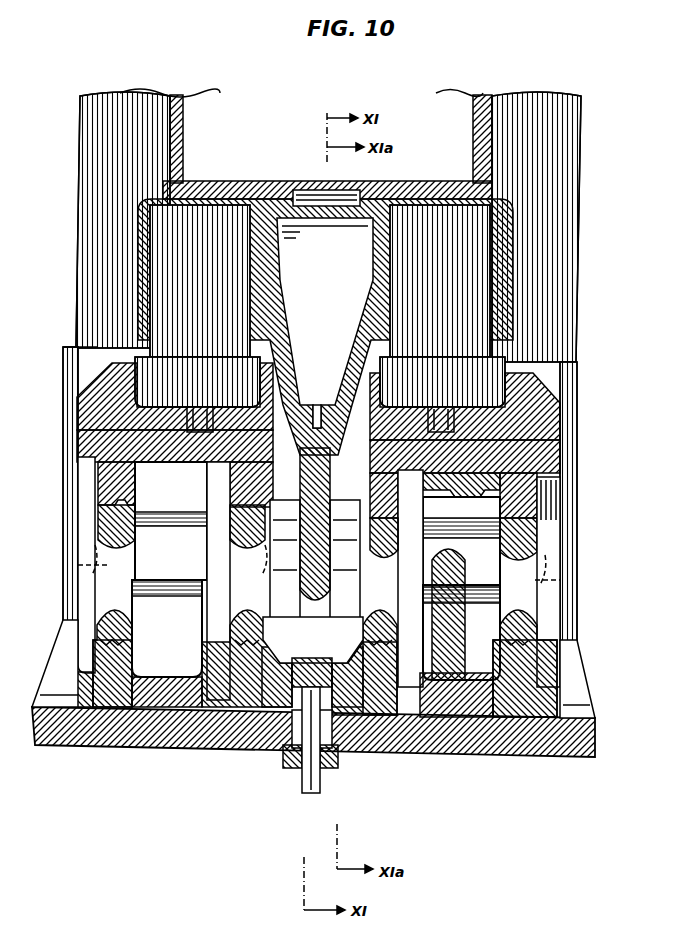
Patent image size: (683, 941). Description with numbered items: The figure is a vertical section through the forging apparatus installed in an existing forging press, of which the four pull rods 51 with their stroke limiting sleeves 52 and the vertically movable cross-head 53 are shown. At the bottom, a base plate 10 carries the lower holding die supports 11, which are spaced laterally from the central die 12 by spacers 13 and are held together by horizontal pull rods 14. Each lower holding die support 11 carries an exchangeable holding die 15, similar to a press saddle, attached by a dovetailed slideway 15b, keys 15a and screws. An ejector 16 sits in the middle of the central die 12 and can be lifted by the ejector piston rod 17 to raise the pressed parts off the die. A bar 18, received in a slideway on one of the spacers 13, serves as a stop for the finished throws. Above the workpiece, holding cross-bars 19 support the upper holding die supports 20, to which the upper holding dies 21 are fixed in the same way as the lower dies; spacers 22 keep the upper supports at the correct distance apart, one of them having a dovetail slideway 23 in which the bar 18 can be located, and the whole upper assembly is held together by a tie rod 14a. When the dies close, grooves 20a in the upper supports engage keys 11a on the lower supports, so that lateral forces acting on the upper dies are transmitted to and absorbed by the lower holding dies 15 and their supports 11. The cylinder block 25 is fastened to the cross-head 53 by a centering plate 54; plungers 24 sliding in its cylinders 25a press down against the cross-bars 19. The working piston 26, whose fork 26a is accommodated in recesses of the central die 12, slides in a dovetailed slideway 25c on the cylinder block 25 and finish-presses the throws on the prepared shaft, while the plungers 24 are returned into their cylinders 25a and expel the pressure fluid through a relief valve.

The base plate 10 is at (595, 745).
The lower holding die support 11 is at (50, 700).
The key 11a is at (78, 566).
The central die 12 is at (268, 748).
The spacer 13 is at (155, 708).
The horizontal pull rod 14 is at (316, 630).
The tie rod 14a is at (185, 516).
The holding die 15 is at (100, 608).
The key 15a is at (313, 678).
The dovetailed slideway 15b is at (100, 642).
The ejector 16 is at (266, 674).
The ejector piston rod 17 is at (322, 788).
The bar 18 is at (458, 556).
The holding cross-bar 19 is at (85, 410).
The upper holding die support 20 is at (85, 445).
The groove 20a is at (90, 545).
The holding die 21 is at (100, 515).
The spacer 22 is at (153, 437).
The dovetail slideway 23 is at (450, 482).
The plunger 24 is at (196, 222).
The cylinder block 25 is at (375, 198).
The cylinder 25a is at (255, 258).
The dovetailed slideway 25c is at (318, 420).
The working piston 26 is at (302, 525).
The fork 26a is at (300, 638).
The pull rod 51 is at (90, 195).
The stroke limiting sleeve 52 is at (65, 368).
The cross-head 53 is at (475, 120).
The centering plate 54 is at (300, 190).